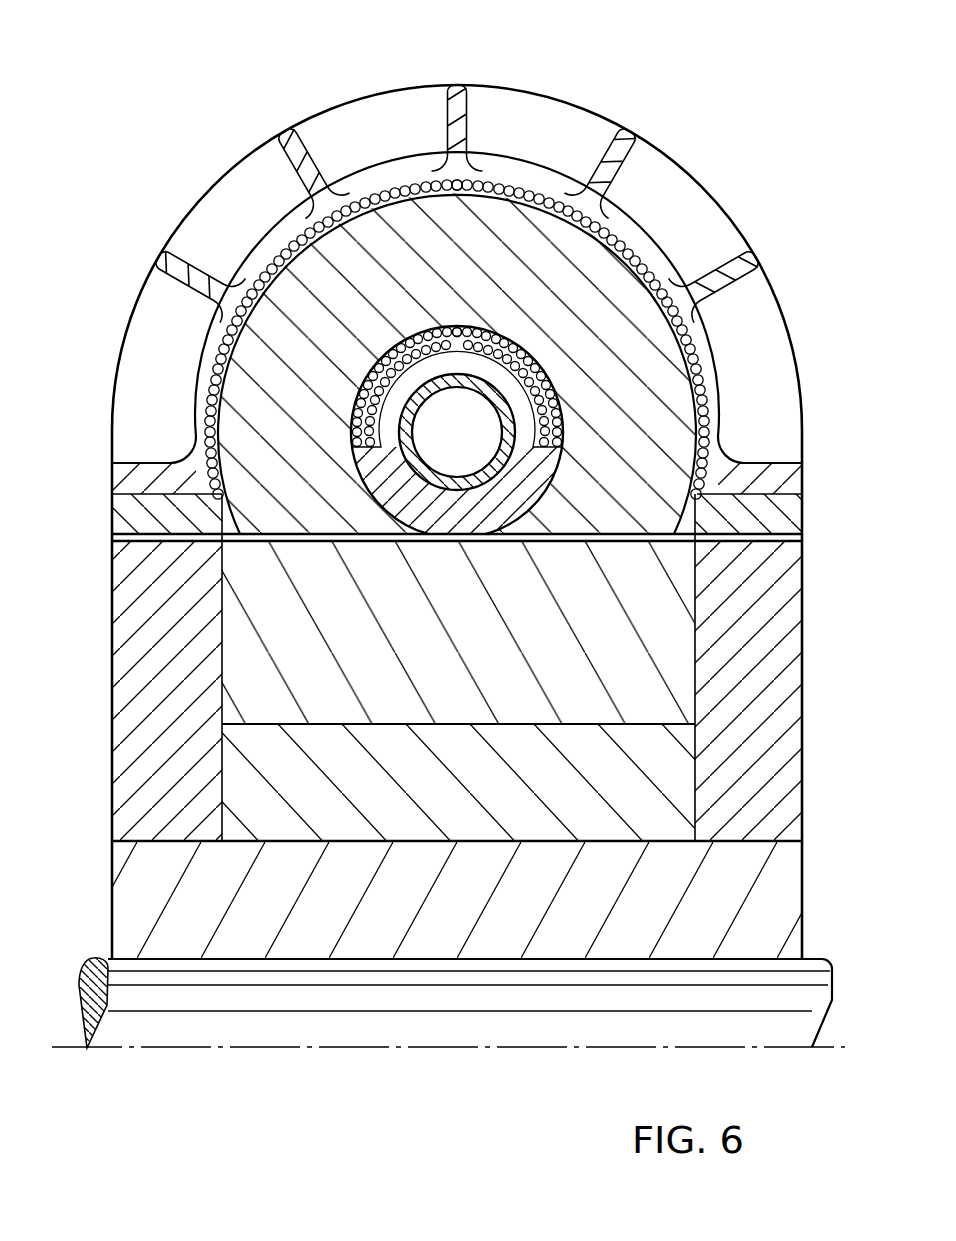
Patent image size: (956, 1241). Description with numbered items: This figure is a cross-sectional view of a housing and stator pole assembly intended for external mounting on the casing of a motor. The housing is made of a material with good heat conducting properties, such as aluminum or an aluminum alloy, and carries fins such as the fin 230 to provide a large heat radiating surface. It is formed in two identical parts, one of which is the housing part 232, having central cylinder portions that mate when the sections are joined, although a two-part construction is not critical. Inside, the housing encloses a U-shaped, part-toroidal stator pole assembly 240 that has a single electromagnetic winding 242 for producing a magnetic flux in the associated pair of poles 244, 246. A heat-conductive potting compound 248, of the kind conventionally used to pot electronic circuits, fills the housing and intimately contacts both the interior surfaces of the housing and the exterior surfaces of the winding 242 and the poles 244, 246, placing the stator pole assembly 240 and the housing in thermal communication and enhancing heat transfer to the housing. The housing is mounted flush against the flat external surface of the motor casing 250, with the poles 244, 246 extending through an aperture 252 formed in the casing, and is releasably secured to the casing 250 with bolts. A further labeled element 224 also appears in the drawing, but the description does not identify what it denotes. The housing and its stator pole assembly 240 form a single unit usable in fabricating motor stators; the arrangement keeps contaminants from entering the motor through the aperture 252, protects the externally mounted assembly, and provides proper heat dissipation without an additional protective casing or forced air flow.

The fin 230 is at (713, 262).
The housing part 232 is at (520, 173).
The stator pole assembly 240 is at (400, 265).
The electromagnetic winding 242 is at (275, 245).
The motor casing 250 is at (133, 507).
The aperture 252 is at (236, 552).
The pole 244 is at (320, 542).
The lower block 224 is at (367, 550).
The heat-conductive potting compound 248 is at (437, 508).
The pole 246 is at (567, 545).